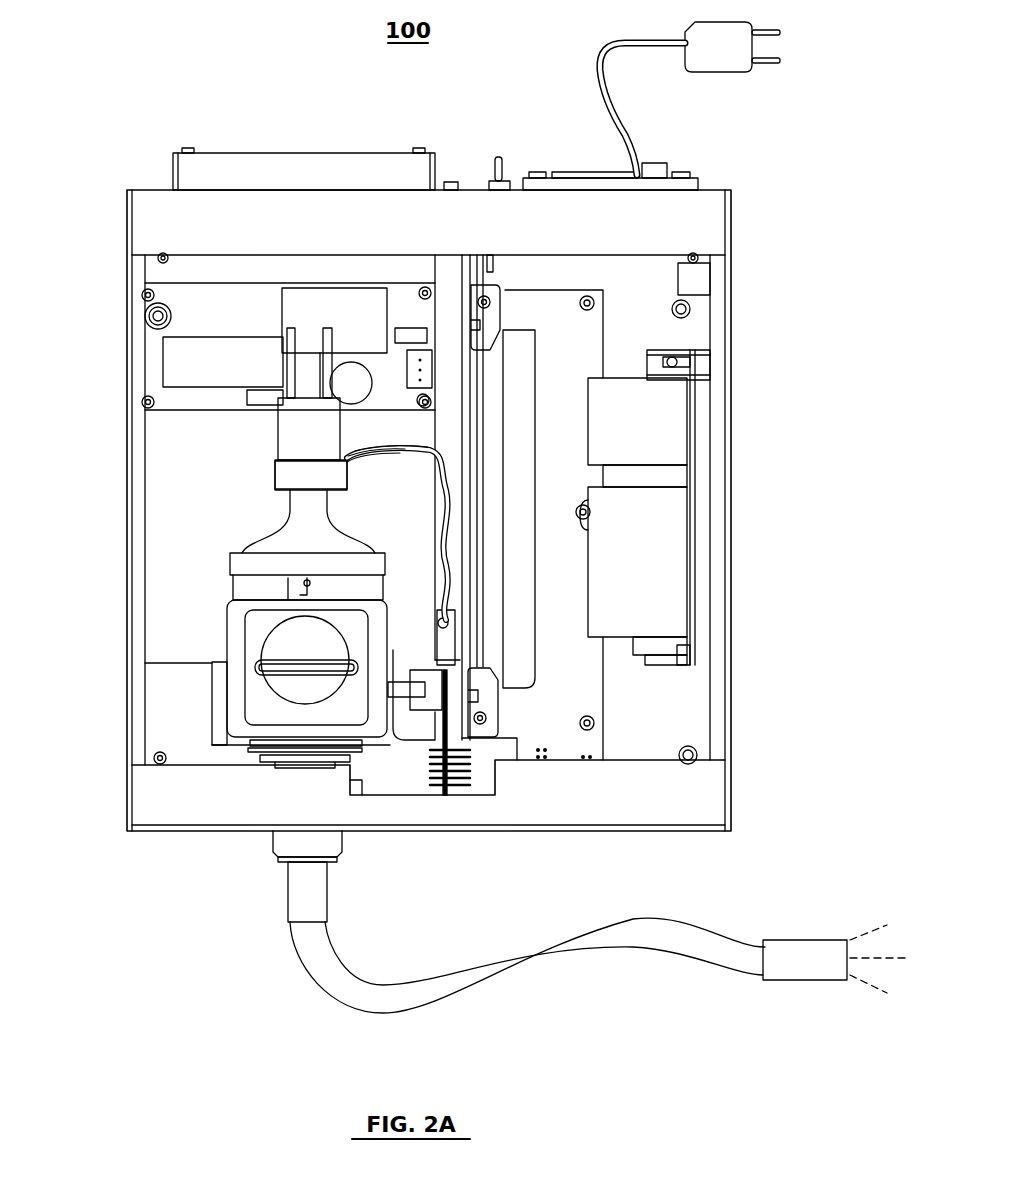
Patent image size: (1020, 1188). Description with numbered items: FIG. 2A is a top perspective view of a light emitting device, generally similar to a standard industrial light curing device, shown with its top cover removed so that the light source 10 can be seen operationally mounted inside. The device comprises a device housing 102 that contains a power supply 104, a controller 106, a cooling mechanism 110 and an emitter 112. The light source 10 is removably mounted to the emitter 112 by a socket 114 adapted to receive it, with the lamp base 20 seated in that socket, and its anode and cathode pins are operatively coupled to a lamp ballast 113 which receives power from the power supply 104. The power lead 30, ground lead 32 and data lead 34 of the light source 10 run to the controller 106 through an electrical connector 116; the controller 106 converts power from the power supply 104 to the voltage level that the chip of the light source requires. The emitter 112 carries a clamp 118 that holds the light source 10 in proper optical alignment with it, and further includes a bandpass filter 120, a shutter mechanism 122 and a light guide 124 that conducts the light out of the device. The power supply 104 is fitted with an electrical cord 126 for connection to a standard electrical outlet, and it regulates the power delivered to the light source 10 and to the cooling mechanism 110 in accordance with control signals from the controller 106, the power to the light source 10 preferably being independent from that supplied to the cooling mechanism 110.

The device housing 102 is at (155, 190).
The power supply 104 is at (690, 438).
The controller 106 is at (483, 590).
The light source 10 is at (250, 525).
The lamp base 20 is at (367, 489).
The power lead 30 is at (353, 450).
The ground lead 32 is at (362, 462).
The data lead 34 is at (402, 445).
The cooling mechanism 110 is at (283, 165).
The emitter 112 is at (230, 758).
The lamp ballast 113 is at (247, 336).
The socket 114 is at (278, 440).
The electrical connector 116 is at (468, 634).
The clamp 118 is at (233, 563).
The bandpass filter 120 is at (255, 665).
The shutter mechanism 122 is at (205, 691).
The light guide 124 is at (574, 925).
The electrical cord 126 is at (705, 72).